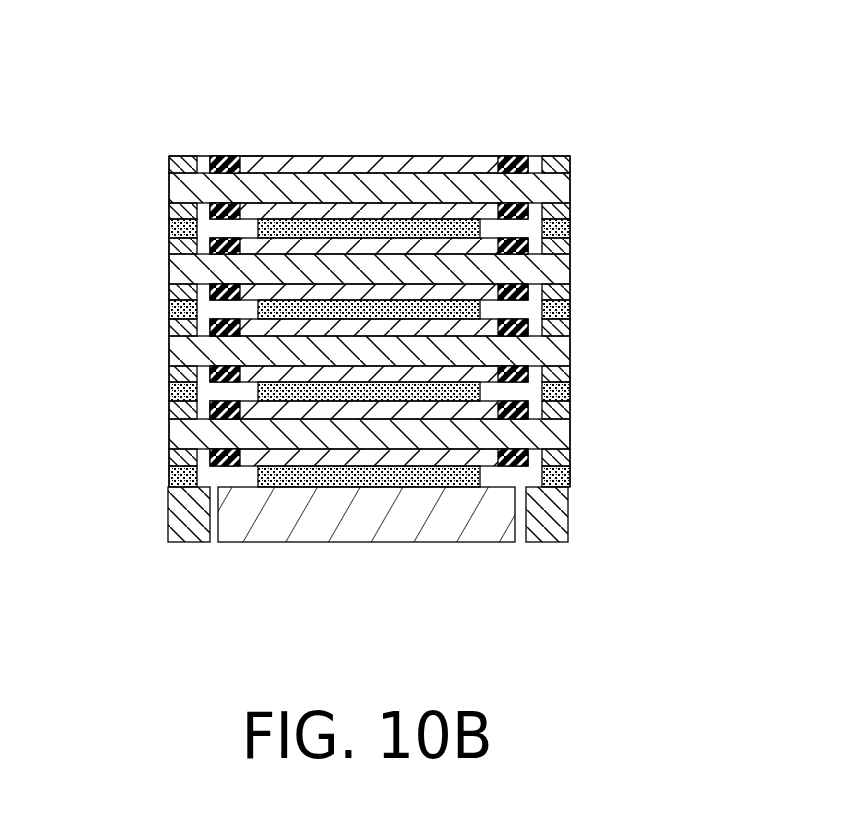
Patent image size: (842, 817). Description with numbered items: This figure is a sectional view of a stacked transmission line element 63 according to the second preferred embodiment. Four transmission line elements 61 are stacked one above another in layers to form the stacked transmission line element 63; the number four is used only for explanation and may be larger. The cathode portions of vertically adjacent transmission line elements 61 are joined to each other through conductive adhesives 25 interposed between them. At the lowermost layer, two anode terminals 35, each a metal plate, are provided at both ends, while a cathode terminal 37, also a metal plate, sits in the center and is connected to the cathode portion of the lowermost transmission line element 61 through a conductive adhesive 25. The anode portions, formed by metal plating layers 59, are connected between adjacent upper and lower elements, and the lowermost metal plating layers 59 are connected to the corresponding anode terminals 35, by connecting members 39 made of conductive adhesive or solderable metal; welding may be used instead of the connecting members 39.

The stacked transmission line element 63 is at (480, 141).
The transmission line element 61 is at (156, 187).
The metal plating layer 59 is at (187, 162).
The connecting member 39 is at (168, 227).
The conductive adhesive 25 is at (384, 305).
The anode terminal 35 is at (190, 523).
The cathode terminal 37 is at (293, 523).